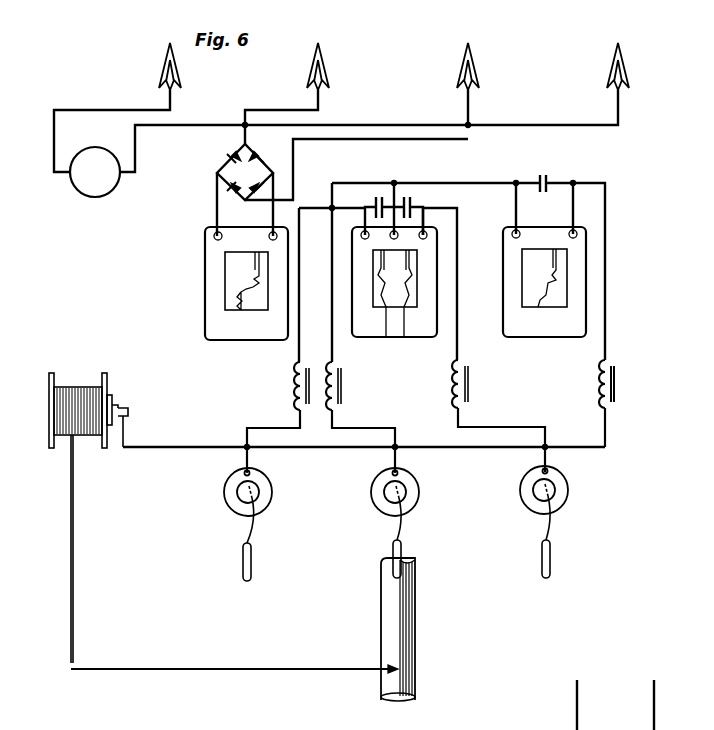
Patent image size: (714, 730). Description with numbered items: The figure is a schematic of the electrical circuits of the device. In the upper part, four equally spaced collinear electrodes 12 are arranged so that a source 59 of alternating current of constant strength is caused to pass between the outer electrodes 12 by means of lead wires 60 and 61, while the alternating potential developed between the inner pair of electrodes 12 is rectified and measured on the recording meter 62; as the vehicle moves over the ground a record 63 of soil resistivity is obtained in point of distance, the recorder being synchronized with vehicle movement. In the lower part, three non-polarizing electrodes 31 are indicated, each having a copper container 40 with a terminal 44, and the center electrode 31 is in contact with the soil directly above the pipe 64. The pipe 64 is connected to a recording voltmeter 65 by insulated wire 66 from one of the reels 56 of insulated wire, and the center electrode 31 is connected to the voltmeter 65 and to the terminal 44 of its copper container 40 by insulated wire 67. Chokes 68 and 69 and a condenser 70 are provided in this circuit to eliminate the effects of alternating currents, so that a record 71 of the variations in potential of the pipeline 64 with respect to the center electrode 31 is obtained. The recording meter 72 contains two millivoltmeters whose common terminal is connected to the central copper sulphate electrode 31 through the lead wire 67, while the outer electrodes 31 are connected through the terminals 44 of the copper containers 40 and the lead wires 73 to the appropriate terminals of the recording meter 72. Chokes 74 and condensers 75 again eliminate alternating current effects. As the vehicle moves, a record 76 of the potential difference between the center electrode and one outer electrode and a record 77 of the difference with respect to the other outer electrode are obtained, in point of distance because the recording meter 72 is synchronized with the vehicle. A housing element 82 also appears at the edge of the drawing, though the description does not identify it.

The electrodes 12 is at (163, 75).
The lead wire 60 is at (87, 110).
The source of alternating current 59 is at (92, 188).
The lead wire 61 is at (213, 126).
The recording meter 62 is at (205, 305).
The record 63 is at (250, 283).
The recording meter 72 is at (437, 300).
The record 76 is at (386, 340).
The record 77 is at (405, 340).
The condensers 75 is at (379, 197).
The insulated wire 67 is at (490, 183).
The condenser 70 is at (547, 175).
The lead wires 73 is at (460, 245).
The recording voltmeter 65 is at (590, 300).
The record 71 is at (537, 292).
The chokes 74 is at (292, 380).
The choke 69 is at (345, 388).
The choke 68 is at (620, 380).
The reel 56 is at (55, 380).
The insulated wire 66 is at (75, 572).
The copper container 40 is at (272, 497).
The terminal 44 is at (245, 473).
The non-polarizing electrode 31 is at (242, 560).
The pipe 64 is at (416, 625).
The housing 82 is at (618, 726).